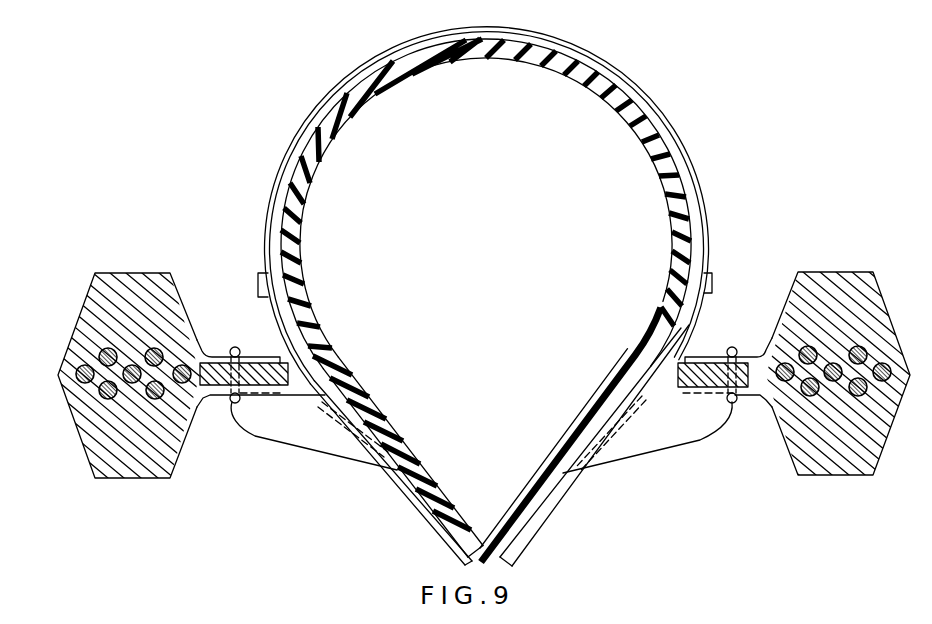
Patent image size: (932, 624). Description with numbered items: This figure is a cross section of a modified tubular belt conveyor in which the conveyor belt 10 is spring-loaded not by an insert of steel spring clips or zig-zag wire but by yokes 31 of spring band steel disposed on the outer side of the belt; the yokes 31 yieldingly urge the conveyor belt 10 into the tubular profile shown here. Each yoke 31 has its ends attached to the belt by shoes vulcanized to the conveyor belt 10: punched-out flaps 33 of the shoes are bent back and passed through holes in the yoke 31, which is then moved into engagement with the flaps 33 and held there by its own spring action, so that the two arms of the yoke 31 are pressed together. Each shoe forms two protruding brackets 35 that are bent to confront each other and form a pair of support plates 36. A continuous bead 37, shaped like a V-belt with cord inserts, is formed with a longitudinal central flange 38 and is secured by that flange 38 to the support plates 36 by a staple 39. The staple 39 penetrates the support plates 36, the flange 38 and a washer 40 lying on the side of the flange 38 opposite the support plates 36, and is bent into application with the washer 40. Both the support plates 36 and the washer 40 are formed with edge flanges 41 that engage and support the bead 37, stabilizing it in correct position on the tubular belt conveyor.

The conveyor belt 10 is at (330, 139).
The yoke 31 is at (709, 150).
The punched-out flap 33 is at (712, 281).
The protruding bracket 35 is at (635, 437).
The support plate 36 is at (750, 393).
The continuous bead 37 is at (150, 467).
The longitudinal central flange 38 is at (712, 357).
The staple 39 is at (730, 405).
The washer 40 is at (698, 345).
The edge flange 41 is at (762, 343).